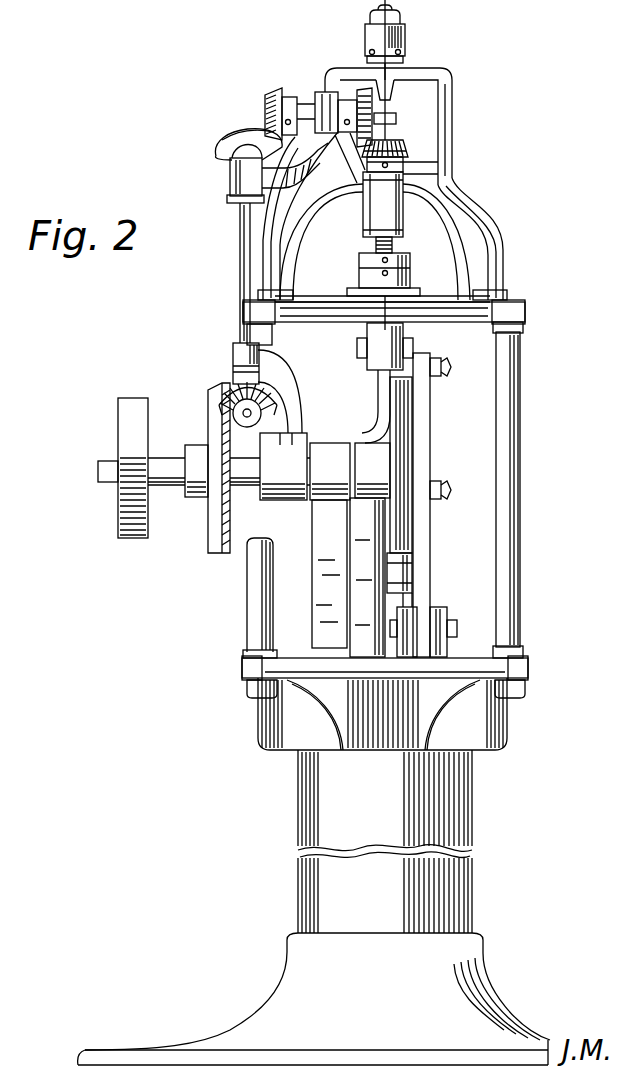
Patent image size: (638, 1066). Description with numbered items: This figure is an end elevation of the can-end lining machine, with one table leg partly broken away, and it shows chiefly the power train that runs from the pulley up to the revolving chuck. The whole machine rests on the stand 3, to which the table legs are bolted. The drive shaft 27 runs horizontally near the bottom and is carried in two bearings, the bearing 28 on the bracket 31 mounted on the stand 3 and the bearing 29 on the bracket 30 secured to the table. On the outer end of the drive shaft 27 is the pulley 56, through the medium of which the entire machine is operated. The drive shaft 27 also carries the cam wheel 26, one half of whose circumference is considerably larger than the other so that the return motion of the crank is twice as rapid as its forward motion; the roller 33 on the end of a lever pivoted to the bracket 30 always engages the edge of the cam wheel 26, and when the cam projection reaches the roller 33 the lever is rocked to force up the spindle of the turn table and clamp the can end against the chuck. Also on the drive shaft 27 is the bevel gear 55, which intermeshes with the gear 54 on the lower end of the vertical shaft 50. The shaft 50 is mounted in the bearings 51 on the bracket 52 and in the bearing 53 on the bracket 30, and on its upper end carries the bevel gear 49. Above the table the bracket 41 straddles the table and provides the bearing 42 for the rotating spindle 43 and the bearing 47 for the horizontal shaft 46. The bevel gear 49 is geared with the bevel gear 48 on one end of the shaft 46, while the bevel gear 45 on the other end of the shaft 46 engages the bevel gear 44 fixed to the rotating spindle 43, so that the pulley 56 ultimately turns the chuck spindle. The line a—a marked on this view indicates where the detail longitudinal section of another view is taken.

The section line a— a is at (390, 3).
The stand 3 is at (372, 737).
The cam wheel 26 is at (400, 457).
The drive shaft 27 is at (167, 475).
The bearing 28 is at (328, 468).
The bearing 29 is at (300, 443).
The bracket 30 is at (273, 372).
The bracket 31 is at (327, 600).
The roller 33 is at (412, 571).
The bracket 41 is at (447, 76).
The bearing 42 is at (400, 222).
The rotating spindle 43 is at (404, 167).
The bevel gear 44 is at (408, 145).
The bevel gear 45 is at (345, 80).
The shaft 46 is at (265, 87).
The bearing 47 is at (322, 110).
The bevel gear 48 is at (265, 118).
The bevel gear 49 is at (214, 150).
The shaft 50 is at (243, 258).
The bearings 51 is at (235, 187).
The bracket 52 is at (280, 180).
The bearing 53 is at (238, 351).
The gear 54 is at (230, 383).
The bevel gear 55 is at (213, 416).
The pulley 56 is at (125, 427).